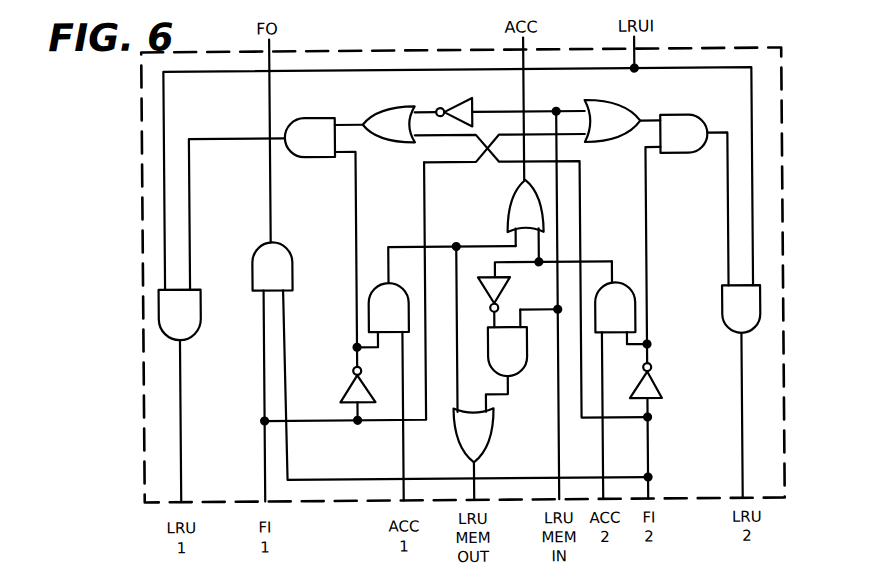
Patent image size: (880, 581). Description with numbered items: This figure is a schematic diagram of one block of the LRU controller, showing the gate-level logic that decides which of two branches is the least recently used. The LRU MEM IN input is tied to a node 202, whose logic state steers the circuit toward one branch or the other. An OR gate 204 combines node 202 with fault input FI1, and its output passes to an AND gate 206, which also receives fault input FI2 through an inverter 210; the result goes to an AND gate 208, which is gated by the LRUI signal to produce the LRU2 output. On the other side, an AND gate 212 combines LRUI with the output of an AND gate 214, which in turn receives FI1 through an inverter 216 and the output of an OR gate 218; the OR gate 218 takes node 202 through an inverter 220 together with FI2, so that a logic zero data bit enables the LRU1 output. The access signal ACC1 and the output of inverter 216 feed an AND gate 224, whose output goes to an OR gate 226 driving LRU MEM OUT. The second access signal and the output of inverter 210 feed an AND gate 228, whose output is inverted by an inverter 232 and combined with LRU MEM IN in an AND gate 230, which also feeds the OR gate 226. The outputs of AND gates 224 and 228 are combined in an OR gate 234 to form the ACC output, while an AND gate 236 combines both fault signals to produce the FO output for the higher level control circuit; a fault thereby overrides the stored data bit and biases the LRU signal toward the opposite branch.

The node 202 is at (566, 86).
The OR gate 204 is at (617, 102).
The AND gate 206 is at (693, 113).
The AND gate 208 is at (730, 312).
The inverter 210 is at (663, 392).
The AND gate 212 is at (196, 318).
The AND gate 214 is at (320, 124).
The inverter 216 is at (345, 393).
The OR gate 218 is at (382, 105).
The inverter 220 is at (457, 97).
The AND gate 224 is at (388, 303).
The OR gate 226 is at (486, 443).
The AND gate 228 is at (622, 297).
The AND gate 230 is at (515, 370).
The inverter 232 is at (508, 286).
The OR gate 234 is at (509, 205).
The AND gate 236 is at (253, 262).